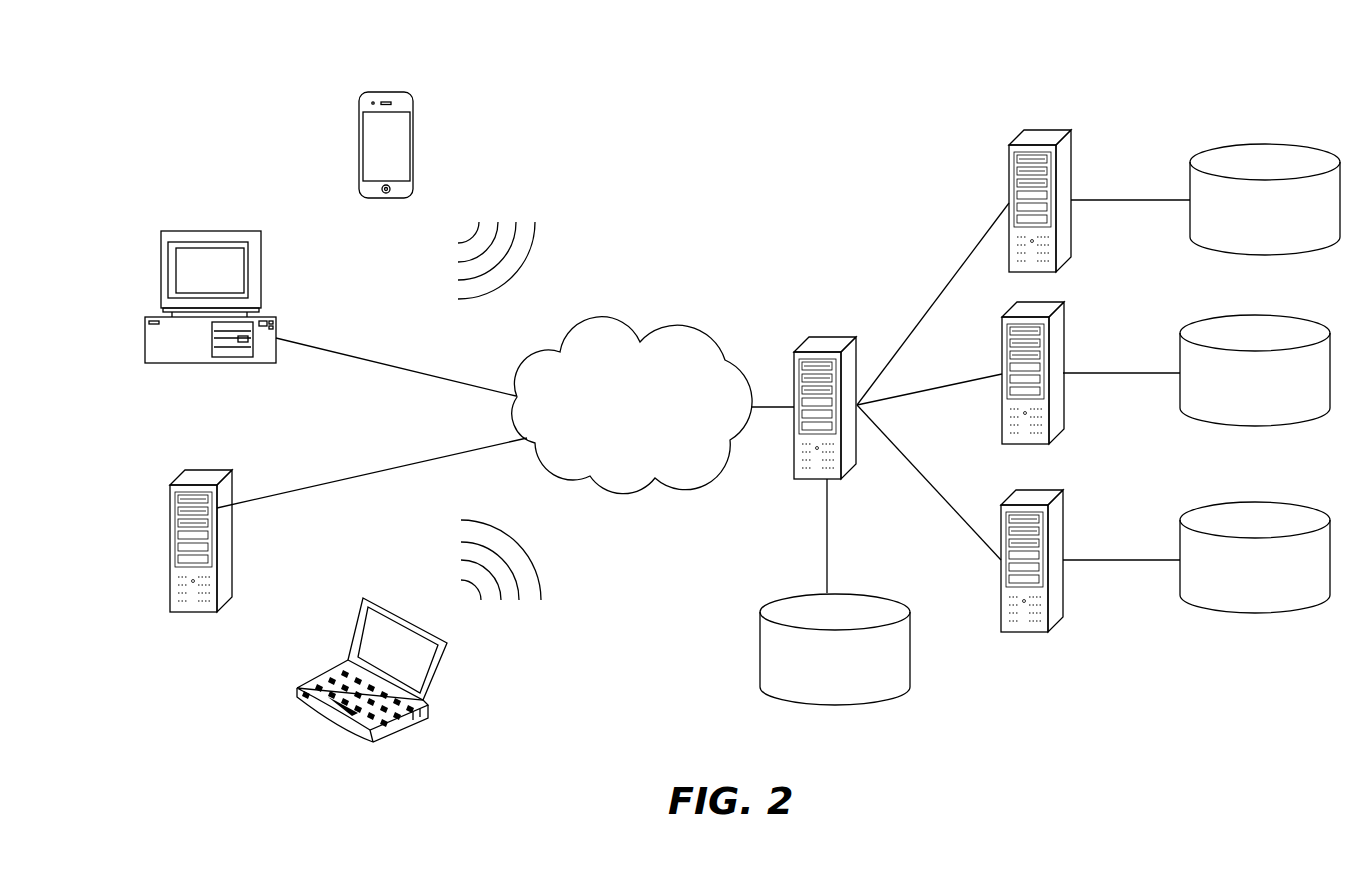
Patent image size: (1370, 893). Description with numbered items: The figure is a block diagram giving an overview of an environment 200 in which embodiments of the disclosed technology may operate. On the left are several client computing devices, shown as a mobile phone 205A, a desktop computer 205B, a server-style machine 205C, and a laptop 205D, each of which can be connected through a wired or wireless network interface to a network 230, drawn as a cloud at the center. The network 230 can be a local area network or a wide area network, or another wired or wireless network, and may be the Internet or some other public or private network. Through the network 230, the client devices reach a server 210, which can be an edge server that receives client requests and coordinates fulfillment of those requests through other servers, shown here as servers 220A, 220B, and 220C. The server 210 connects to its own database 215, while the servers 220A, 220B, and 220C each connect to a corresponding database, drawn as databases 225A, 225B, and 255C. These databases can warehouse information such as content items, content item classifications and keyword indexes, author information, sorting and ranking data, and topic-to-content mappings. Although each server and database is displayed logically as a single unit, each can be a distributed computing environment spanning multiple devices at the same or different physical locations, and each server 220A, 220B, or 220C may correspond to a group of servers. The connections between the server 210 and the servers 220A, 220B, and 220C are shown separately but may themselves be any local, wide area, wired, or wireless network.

The environment 200 is at (862, 100).
The client computing device 205A is at (402, 92).
The client computing device 205B is at (253, 232).
The client computing device 205C is at (222, 470).
The client computing device 205D is at (443, 675).
The server 210 is at (837, 337).
The database 215 is at (883, 594).
The server 220A is at (1072, 131).
The server 220B is at (1063, 302).
The server 220C is at (1063, 488).
The database 225A is at (1260, 142).
The database 225B is at (1252, 313).
The database 255C is at (1252, 500).
The network 230 is at (690, 323).